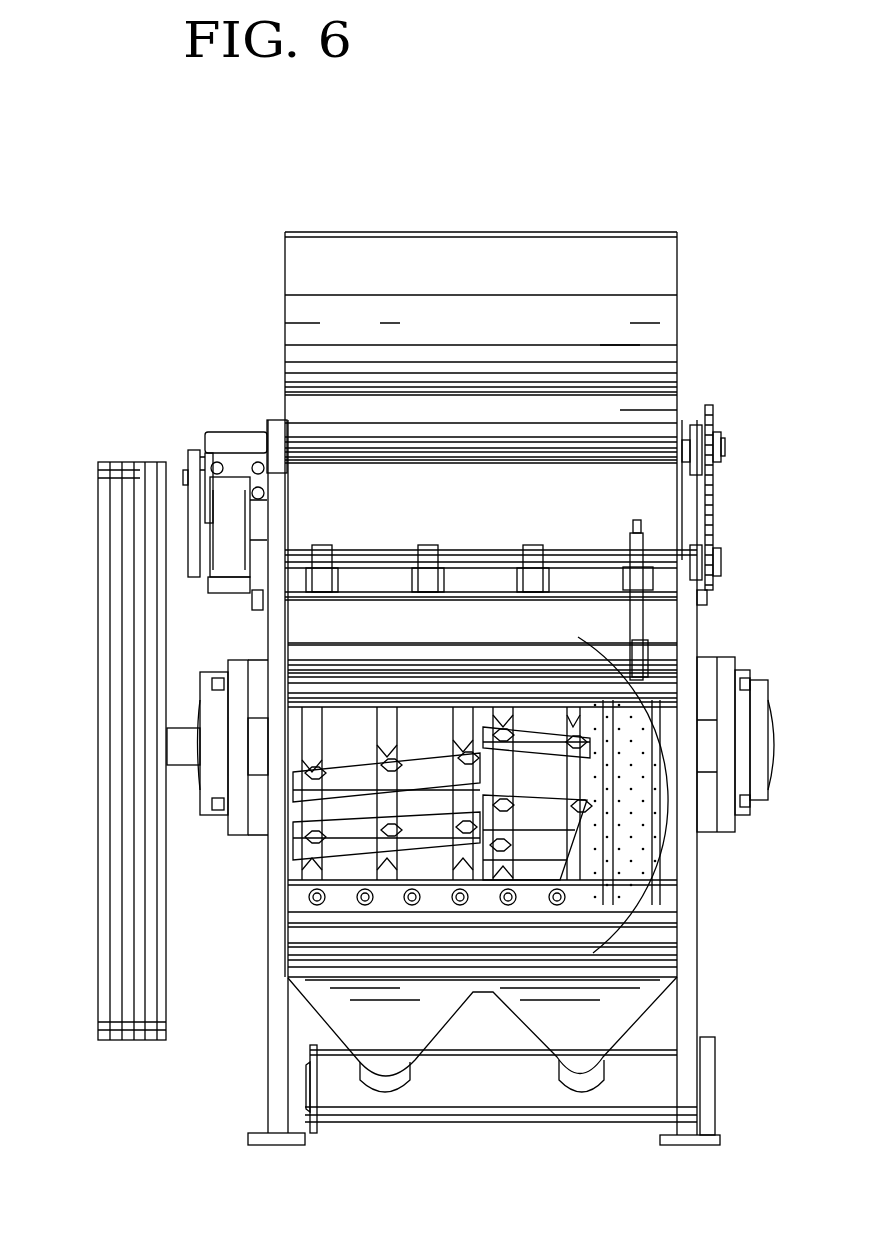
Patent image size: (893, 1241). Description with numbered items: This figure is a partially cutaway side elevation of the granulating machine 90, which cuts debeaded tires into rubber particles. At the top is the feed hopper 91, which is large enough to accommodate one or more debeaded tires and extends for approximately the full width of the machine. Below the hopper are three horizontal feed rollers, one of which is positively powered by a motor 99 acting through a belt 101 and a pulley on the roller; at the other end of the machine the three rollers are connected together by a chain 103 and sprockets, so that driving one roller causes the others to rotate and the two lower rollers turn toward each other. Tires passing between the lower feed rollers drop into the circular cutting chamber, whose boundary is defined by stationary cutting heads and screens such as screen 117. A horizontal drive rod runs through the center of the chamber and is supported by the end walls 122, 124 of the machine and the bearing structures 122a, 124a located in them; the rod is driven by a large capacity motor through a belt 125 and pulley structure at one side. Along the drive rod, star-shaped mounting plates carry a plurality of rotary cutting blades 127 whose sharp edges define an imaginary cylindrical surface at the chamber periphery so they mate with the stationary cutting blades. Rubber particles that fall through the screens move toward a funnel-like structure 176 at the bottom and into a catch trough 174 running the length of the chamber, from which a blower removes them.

The granulating machine 90 is at (279, 404).
The feed hopper 91 is at (670, 285).
The motor 99 is at (220, 590).
The belt 101 is at (193, 477).
The chain 103 is at (713, 488).
The screen 117 is at (645, 875).
The end wall 122 is at (692, 876).
The bearing structure 122a is at (745, 832).
The end wall 124 is at (275, 858).
The bearing structure 124a is at (235, 822).
The belt 125 is at (102, 524).
The rotary cutting blades 127 is at (540, 745).
The catch trough 174 is at (460, 1110).
The funnel-like structure 176 is at (660, 990).